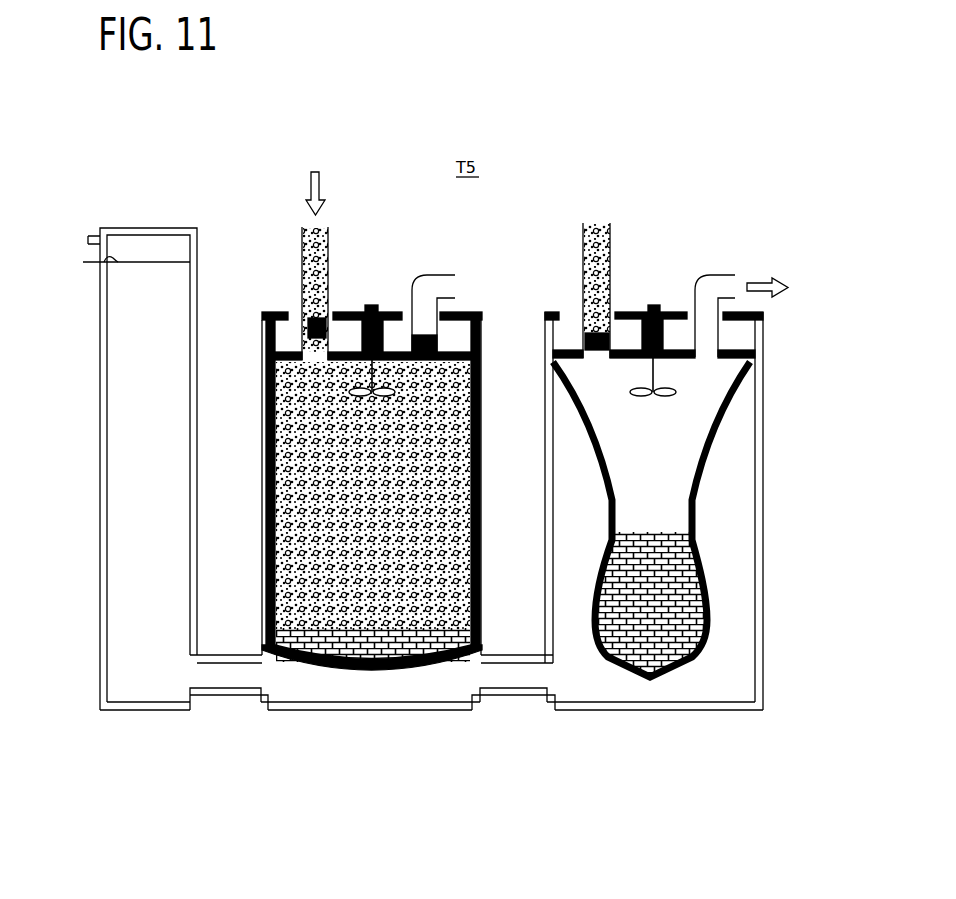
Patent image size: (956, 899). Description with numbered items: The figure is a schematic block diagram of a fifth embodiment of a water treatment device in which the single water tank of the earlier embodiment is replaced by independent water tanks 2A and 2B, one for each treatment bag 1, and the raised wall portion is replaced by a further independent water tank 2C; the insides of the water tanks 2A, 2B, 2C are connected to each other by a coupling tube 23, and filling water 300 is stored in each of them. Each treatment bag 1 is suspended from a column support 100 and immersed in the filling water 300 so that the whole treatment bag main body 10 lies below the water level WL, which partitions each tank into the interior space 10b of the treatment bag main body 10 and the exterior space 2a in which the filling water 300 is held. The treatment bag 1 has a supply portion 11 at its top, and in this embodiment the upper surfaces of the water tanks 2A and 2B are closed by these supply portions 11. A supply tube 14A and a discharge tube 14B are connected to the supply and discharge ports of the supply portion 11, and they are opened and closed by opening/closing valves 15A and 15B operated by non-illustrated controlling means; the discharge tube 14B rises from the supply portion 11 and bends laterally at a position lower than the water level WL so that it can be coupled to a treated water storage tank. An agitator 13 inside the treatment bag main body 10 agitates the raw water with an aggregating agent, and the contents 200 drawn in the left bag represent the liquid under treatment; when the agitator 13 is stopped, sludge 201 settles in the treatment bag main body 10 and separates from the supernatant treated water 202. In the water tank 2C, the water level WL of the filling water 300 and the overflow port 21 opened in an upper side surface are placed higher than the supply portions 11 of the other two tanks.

The treatment bag 1 is at (577, 420).
The water tank 2A is at (262, 540).
The water tank 2B is at (543, 562).
The water tank 2C is at (100, 517).
The exterior space 2a is at (405, 702).
The treatment bag main body 10 is at (607, 470).
The interior space 10b is at (625, 510).
The supply portion 11 is at (462, 352).
The agitator 13 is at (388, 322).
The supply tube 14A is at (329, 248).
The discharge tube 14B is at (455, 275).
The opening/closing valve 15A is at (300, 298).
The opening/closing valve 15B is at (423, 337).
The overflow port 21 is at (100, 232).
The coupling tube 23 is at (227, 695).
The column support 100 is at (355, 312).
The settled sludge 200 is at (262, 420).
The sludge 201 is at (598, 622).
The treated water 202 is at (680, 464).
The filling water 300 is at (123, 619).
The water level WL is at (100, 262).